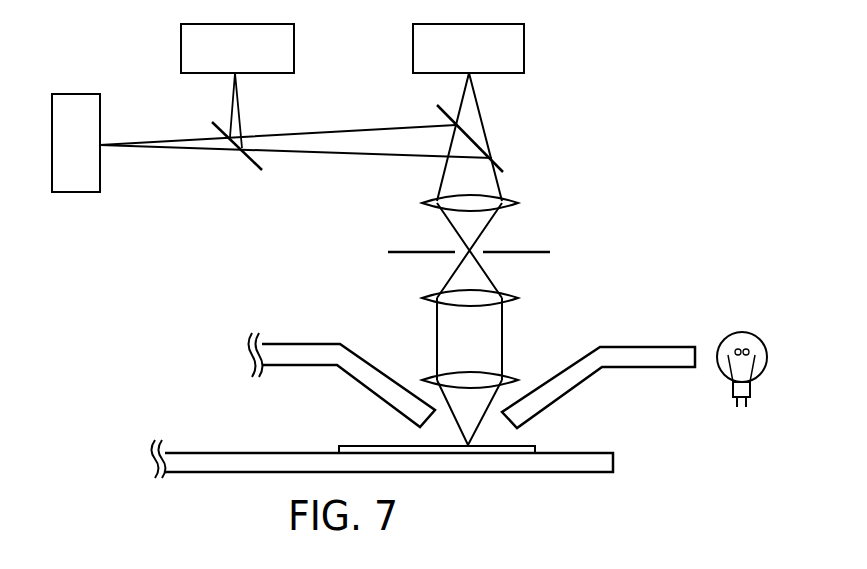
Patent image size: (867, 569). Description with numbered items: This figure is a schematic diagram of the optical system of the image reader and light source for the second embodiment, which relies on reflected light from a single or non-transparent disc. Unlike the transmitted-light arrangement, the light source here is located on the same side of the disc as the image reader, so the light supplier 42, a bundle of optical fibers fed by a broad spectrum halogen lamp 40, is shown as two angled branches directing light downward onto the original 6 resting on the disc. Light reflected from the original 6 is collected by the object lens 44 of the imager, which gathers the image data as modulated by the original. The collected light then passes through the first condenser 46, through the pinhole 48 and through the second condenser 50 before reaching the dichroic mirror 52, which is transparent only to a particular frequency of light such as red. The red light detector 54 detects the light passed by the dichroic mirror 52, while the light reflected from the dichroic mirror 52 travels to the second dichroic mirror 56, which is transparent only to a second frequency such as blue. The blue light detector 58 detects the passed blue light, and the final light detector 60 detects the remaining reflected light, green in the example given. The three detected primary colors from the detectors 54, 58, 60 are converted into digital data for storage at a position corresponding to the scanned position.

The original 6 is at (513, 445).
The halogen lamp 40 is at (733, 397).
The light supplier 42 is at (328, 342).
The object lens 44 is at (430, 380).
The first condenser 46 is at (427, 298).
The pinhole 48 is at (403, 250).
The second condenser 50 is at (507, 200).
The dichroic mirror 52 is at (493, 158).
The red light detector 54 is at (524, 49).
The second dichroic mirror 56 is at (250, 161).
The blue light detector 58 is at (100, 177).
The final light detector 60 is at (181, 50).